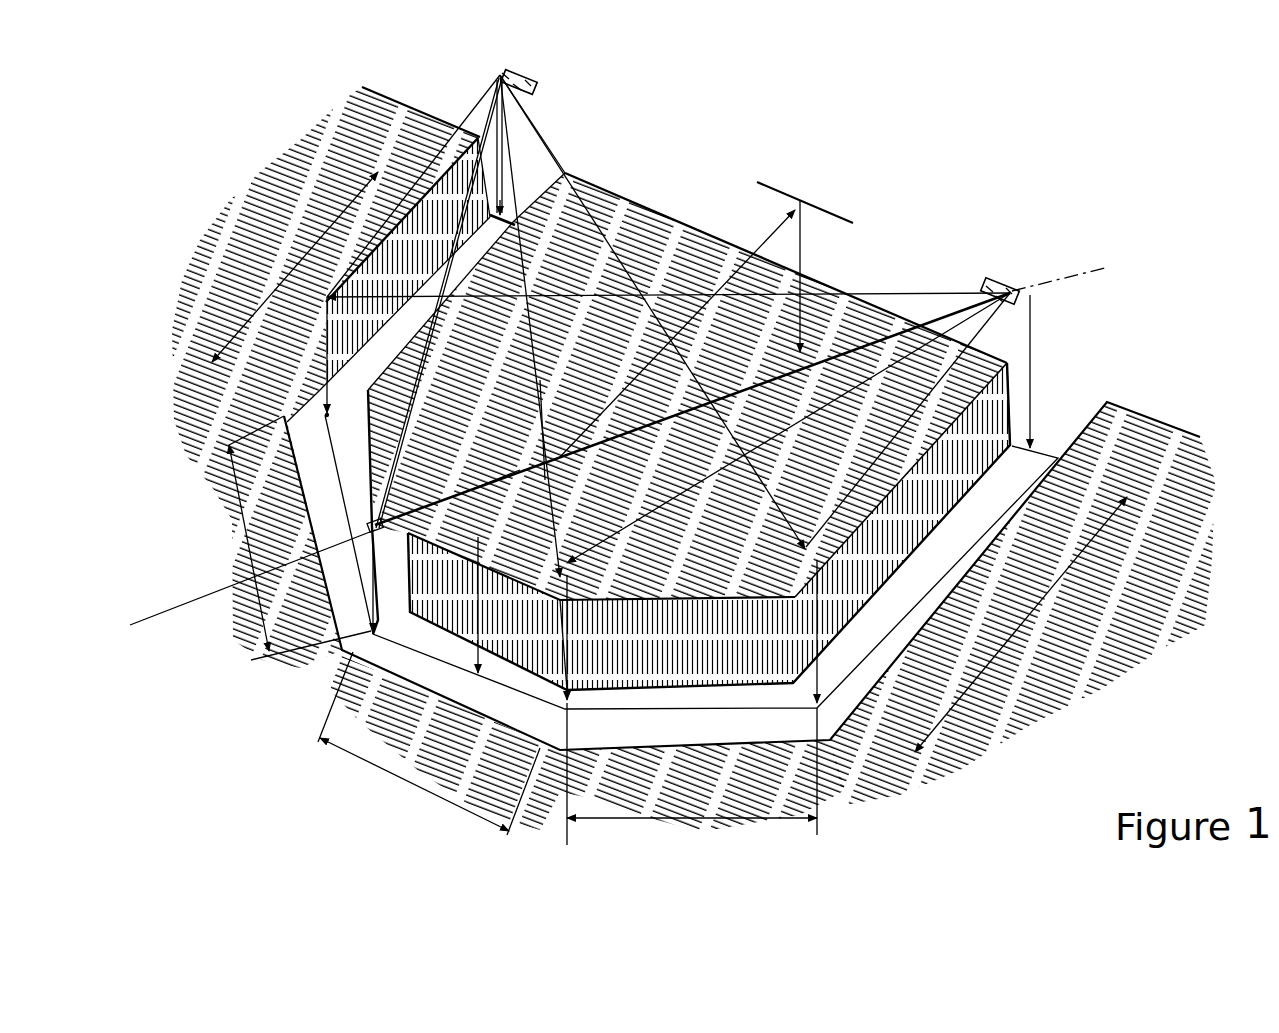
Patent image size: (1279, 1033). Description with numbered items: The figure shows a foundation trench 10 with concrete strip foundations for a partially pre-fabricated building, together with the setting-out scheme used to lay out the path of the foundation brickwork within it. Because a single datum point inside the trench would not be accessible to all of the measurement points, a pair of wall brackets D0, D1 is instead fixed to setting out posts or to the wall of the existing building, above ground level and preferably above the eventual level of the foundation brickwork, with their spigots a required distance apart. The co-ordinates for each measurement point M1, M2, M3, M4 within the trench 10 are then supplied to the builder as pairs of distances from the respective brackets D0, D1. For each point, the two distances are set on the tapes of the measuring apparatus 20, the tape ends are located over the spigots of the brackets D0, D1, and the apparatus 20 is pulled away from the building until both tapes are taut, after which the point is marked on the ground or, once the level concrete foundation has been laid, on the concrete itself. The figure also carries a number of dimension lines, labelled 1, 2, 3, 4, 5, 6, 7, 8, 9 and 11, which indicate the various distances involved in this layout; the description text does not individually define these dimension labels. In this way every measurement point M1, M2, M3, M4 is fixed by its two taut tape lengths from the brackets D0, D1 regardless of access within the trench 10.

The distance dimension 1 is at (256, 523).
The distance dimension 2 is at (744, 417).
The distance dimension 3 is at (692, 774).
The distance dimension 4 is at (429, 743).
The distance dimension 5 is at (249, 548).
The distance dimension 6 is at (295, 267).
The distance dimension 7 is at (311, 611).
The distance dimension 8 is at (495, 479).
The distance dimension 9 is at (540, 430).
The trench 10 is at (1080, 405).
The height dimension 11 is at (706, 319).
The measuring apparatus 20 is at (371, 578).
The wall bracket D0 is at (566, 311).
The wall bracket D1 is at (612, 455).
The measurement point M1 is at (341, 418).
The measurement point M2 is at (390, 587).
The measurement point M3 is at (582, 644).
The measurement point M4 is at (834, 633).